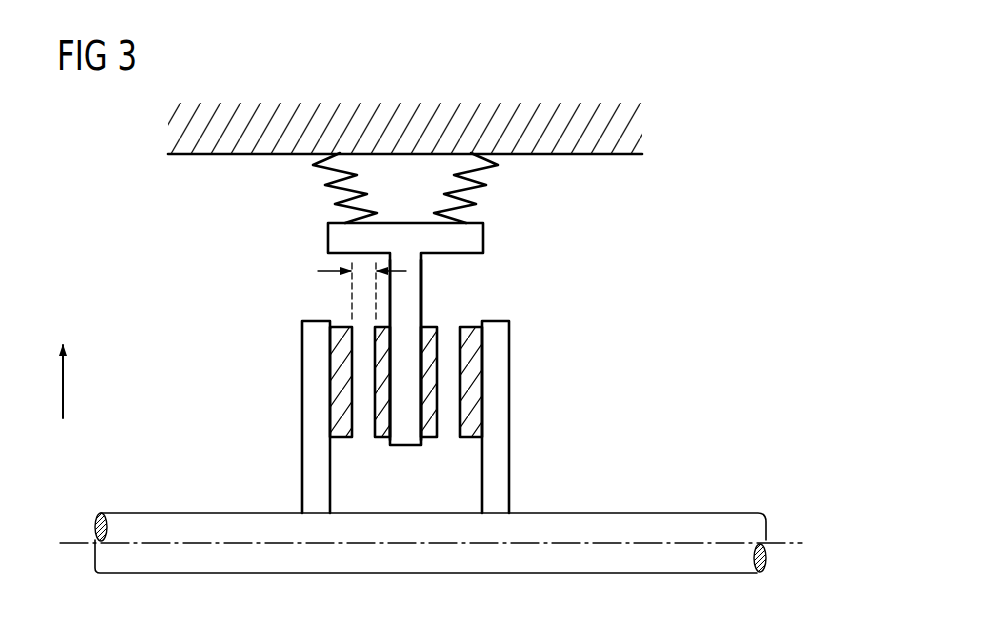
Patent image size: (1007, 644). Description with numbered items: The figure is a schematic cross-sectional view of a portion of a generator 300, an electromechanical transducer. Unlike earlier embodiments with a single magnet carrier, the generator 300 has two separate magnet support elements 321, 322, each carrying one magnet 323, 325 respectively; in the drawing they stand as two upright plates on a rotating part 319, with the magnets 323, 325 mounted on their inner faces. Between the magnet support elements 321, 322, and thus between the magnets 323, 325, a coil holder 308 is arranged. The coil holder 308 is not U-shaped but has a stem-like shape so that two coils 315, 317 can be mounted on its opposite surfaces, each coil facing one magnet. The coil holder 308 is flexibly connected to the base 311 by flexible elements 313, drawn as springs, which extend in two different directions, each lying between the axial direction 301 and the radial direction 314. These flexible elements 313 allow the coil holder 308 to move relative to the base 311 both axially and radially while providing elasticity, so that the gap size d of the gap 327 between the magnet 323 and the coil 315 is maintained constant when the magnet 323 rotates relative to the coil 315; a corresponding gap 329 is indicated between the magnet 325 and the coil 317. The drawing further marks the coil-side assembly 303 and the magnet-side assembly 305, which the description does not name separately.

The generator 300 is at (128, 236).
The axial direction 301 is at (792, 547).
The T-shaped brake element 303 is at (280, 248).
The brake caliper arrangement 305 is at (598, 431).
The coil holder 308 is at (408, 288).
The base 311 is at (636, 131).
The flexible elements 313 is at (323, 182).
The radial direction 314 is at (65, 387).
The coil 315 is at (380, 326).
The coil 317 is at (430, 326).
The shaft 319 is at (470, 574).
The magnet support element 321 is at (313, 481).
The magnet support element 322 is at (502, 465).
The magnet 323 is at (336, 326).
The magnet 325 is at (472, 326).
The gap 327 is at (364, 441).
The clamping force 329 is at (446, 441).
The gap size d is at (362, 289).